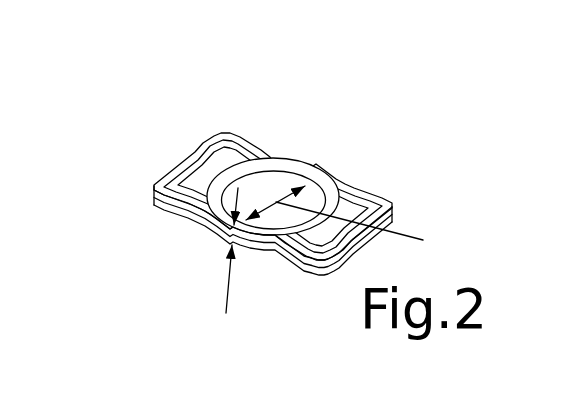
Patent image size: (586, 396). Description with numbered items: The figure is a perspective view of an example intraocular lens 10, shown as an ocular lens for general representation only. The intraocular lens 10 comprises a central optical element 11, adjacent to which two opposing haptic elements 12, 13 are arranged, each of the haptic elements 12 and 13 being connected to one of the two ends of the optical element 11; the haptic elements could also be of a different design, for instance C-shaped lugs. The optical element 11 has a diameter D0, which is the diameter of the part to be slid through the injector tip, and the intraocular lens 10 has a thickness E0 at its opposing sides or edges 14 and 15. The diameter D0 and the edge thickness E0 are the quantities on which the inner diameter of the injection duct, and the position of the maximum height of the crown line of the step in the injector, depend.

The intraocular lens 10 is at (232, 190).
The optical element 11 is at (267, 187).
The haptic element 12 is at (150, 195).
The haptic element 13 is at (305, 277).
The edge 14 is at (340, 158).
The edge 15 is at (208, 228).
The thickness E0 is at (227, 288).
The diameter of the optical element D0 is at (372, 229).